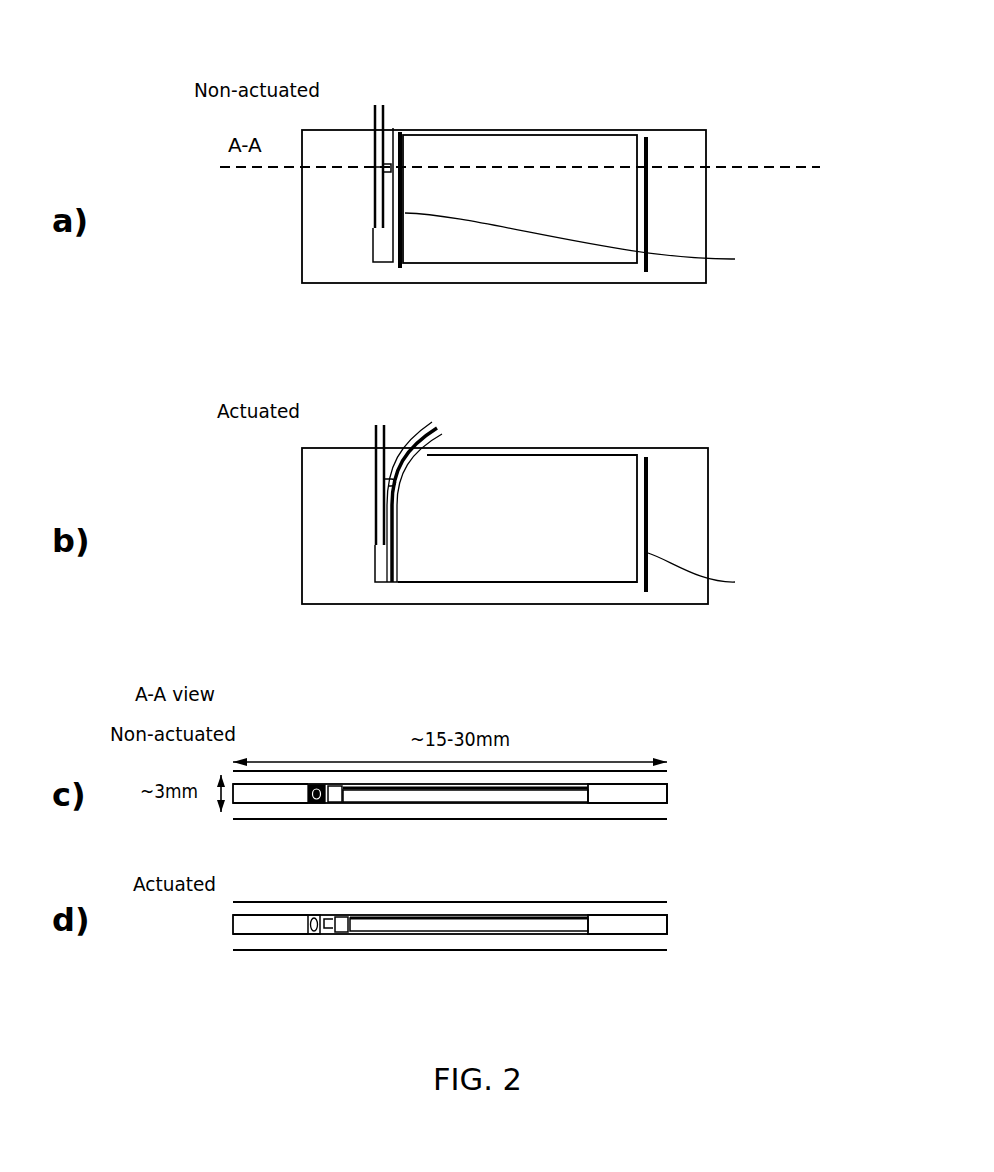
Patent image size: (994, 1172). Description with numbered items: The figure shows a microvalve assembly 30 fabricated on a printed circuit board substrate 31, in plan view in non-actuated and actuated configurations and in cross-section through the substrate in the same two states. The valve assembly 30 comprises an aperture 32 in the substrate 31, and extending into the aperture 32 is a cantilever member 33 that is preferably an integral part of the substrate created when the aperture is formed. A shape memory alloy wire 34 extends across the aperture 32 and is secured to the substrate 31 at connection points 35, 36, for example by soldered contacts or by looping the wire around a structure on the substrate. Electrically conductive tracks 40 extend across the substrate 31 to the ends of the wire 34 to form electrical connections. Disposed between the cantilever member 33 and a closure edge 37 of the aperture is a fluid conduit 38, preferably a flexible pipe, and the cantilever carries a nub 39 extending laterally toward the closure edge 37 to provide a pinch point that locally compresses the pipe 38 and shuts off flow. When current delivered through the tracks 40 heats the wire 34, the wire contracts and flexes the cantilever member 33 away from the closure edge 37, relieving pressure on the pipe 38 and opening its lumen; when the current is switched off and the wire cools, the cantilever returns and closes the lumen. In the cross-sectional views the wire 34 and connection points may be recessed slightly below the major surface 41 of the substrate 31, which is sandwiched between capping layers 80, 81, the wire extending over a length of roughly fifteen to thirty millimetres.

The microvalve assembly 30 is at (175, 60).
The printed circuit board substrate 31 is at (302, 262).
The aperture 32 is at (503, 211).
The cantilever member 33 is at (393, 180).
The shape memory alloy wire 34 is at (600, 136).
The connection point 35 is at (648, 138).
The connection point 36 is at (404, 133).
The closure edge 37 is at (373, 232).
The fluid conduit 38 is at (384, 107).
The nub 39 is at (378, 160).
The electrically conductive tracks 40 is at (648, 268).
The major surface 41 is at (292, 784).
The capping layer 80 is at (625, 777).
The capping layer 81 is at (648, 813).